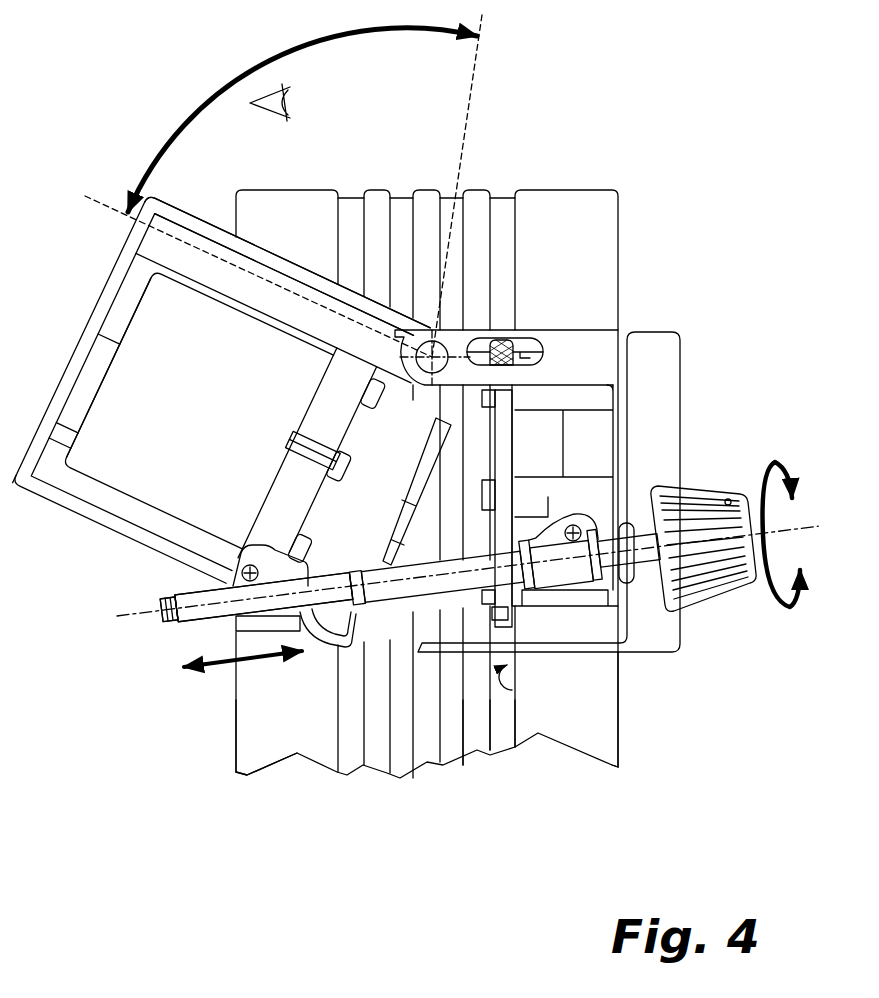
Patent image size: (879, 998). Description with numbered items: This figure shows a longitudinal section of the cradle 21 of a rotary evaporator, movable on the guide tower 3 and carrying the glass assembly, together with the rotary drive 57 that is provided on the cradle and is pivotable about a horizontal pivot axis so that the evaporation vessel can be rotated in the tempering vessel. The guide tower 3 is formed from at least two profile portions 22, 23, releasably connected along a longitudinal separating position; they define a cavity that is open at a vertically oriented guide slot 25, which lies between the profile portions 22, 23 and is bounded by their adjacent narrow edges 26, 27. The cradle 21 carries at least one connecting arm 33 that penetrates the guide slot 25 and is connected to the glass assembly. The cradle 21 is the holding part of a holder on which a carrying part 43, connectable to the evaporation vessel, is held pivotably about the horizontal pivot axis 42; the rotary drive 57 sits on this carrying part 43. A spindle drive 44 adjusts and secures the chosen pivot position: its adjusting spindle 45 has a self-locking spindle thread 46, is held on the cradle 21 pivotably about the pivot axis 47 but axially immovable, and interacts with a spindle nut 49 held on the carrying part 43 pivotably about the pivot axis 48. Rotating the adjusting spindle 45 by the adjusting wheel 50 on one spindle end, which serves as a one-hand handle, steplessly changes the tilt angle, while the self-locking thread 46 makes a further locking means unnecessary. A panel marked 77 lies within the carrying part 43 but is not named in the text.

The guide tower 3 is at (597, 187).
The cradle 21 is at (640, 316).
The profile portion 22 is at (272, 752).
The profile portion 23 is at (620, 736).
The guide slot 25 is at (500, 737).
The narrow edge 26 is at (492, 698).
The narrow edge 27 is at (515, 680).
The connecting arm 33 is at (517, 385).
The horizontal pivot axis 42 is at (440, 332).
The carrying part 43 is at (297, 250).
The spindle drive 44 is at (520, 513).
The adjusting spindle 45 is at (190, 615).
The self-locking spindle thread 46 is at (185, 593).
The horizontal pivot axis 47 is at (580, 518).
The horizontal pivot axis 48 is at (258, 560).
The spindle nut 49 is at (300, 612).
The adjusting wheel 50 is at (730, 501).
The rotary drive 57 is at (224, 373).
The tray bottom 77 is at (258, 457).